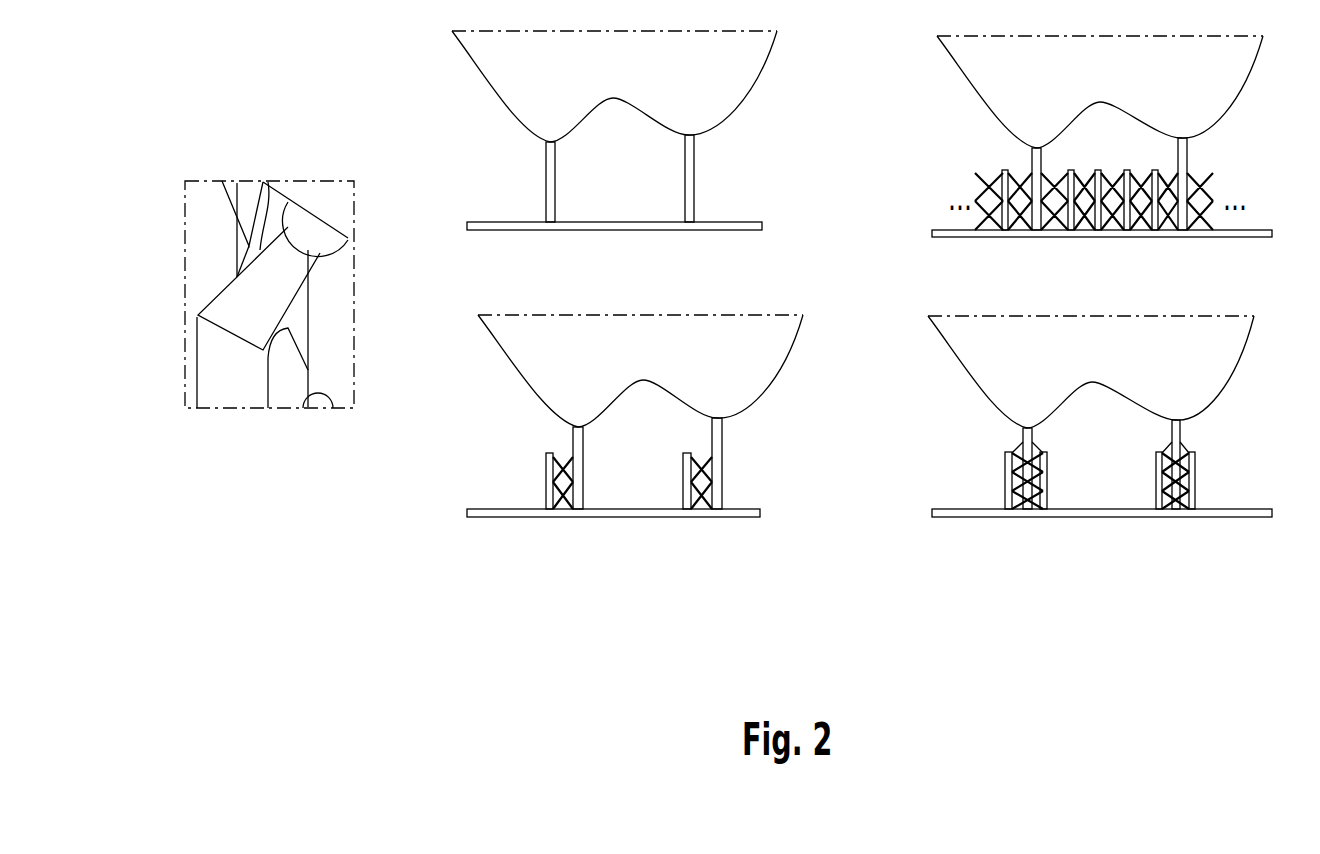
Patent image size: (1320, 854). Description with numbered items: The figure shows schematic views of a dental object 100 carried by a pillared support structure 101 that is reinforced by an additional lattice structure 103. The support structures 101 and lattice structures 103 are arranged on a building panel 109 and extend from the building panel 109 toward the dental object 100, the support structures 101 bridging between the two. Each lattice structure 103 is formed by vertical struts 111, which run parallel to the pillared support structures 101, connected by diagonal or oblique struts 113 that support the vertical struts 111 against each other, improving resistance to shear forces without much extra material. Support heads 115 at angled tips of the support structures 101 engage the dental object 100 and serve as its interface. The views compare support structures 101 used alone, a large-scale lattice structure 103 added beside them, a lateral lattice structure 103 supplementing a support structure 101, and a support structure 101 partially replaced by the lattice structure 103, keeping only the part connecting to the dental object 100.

The dental object 100 is at (722, 100).
The pillared support structure 101 is at (550, 188).
The lattice structure 103 is at (968, 185).
The building panel 109 is at (758, 517).
The vertical strut 111 is at (1006, 230).
The diagonal or oblique strut 113 is at (1190, 513).
The support head 115 is at (260, 250).